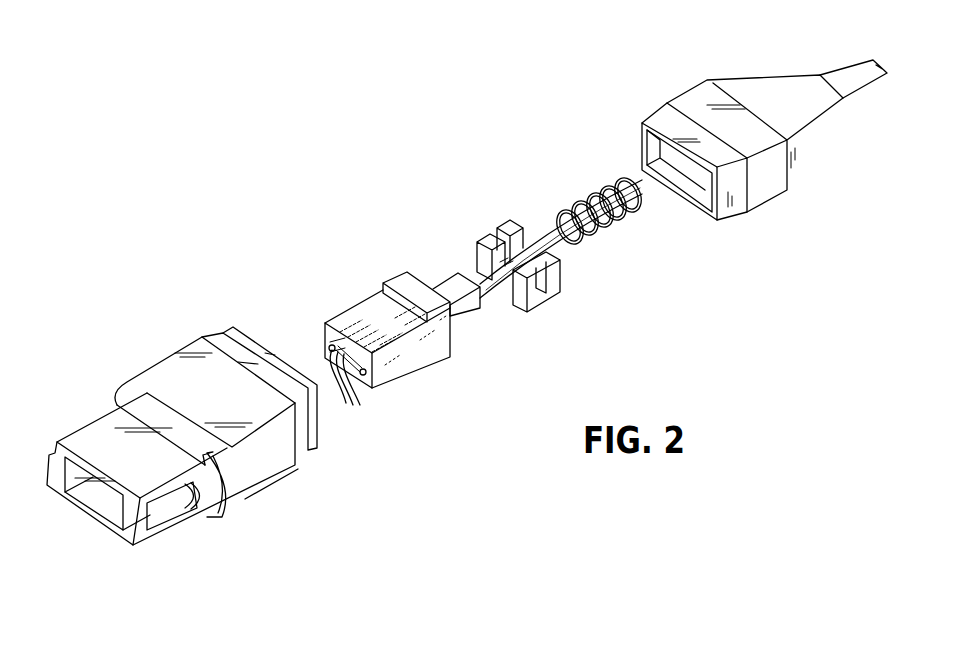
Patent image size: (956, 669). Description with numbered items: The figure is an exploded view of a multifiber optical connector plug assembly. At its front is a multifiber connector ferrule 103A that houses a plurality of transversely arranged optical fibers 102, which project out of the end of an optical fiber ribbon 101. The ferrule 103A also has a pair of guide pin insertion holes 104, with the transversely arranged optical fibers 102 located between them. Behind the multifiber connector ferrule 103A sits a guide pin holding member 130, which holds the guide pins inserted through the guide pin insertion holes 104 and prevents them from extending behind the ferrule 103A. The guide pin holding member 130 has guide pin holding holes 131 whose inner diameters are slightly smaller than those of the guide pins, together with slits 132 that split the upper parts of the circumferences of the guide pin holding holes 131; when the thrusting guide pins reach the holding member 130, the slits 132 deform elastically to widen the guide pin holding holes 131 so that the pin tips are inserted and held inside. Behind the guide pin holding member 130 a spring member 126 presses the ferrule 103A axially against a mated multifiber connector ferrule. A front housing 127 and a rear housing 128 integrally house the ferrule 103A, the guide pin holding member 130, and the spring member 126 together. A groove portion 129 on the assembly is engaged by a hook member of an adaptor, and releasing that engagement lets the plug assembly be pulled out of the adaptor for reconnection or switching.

The optical fiber ribbon 101 is at (863, 70).
The optical fibers 102 is at (353, 389).
The multifiber connector ferrule 103A is at (397, 367).
The guide pin insertion holes 104 is at (330, 347).
The spring member 126 is at (615, 228).
The front housing 127 is at (318, 442).
The rear housing 128 is at (768, 190).
The groove portion 129 is at (227, 493).
The guide pin holding member 130 is at (547, 293).
The guide pin holding holes 131 is at (527, 278).
The slits 132 is at (485, 238).